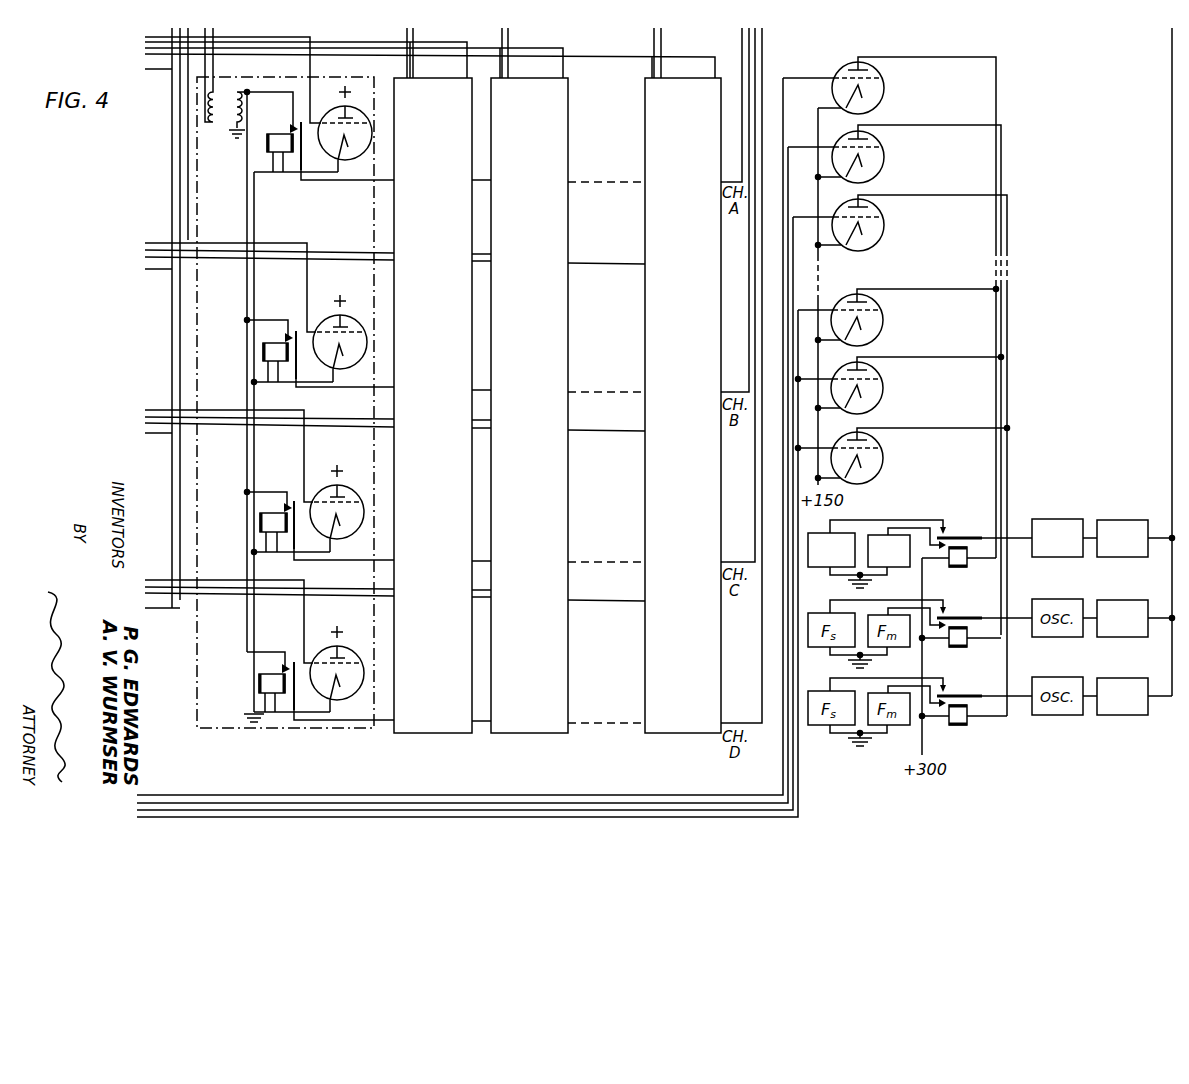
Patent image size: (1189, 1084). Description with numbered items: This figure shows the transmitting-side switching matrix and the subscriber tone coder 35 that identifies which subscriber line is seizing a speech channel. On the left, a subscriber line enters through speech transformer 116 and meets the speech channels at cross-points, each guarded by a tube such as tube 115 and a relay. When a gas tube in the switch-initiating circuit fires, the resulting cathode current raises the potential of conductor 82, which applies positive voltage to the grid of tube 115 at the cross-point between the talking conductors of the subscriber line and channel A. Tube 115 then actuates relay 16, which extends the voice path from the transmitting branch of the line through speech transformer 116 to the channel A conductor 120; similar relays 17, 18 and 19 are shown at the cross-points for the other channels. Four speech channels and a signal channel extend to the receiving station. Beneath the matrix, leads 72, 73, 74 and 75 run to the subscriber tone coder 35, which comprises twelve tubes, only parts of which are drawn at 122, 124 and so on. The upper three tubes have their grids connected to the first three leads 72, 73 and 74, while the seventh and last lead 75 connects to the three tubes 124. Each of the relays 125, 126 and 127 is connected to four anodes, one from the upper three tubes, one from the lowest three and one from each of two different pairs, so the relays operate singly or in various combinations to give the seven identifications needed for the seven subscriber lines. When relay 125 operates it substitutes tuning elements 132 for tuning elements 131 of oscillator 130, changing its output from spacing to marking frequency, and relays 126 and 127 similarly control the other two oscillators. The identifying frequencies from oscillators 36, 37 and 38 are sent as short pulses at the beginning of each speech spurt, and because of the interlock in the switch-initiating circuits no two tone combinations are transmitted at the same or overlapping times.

The relay 16 is at (290, 134).
The relay 17 is at (285, 343).
The relay 18 is at (284, 513).
The relay 19 is at (282, 674).
The subscriber tone coder 35 is at (857, 470).
The oscillator 36 is at (1117, 520).
The oscillator 37 is at (1109, 600).
The oscillator 38 is at (1109, 678).
The lead 72 is at (270, 794).
The lead 73 is at (357, 802).
The lead 74 is at (431, 809).
The lead 75 is at (504, 816).
The conductor 82 is at (312, 69).
The tube 115 is at (350, 161).
The speech transformer 116 is at (238, 92).
The channel A conductor 120 is at (316, 181).
The tube 122 is at (886, 96).
The tubes 124 is at (877, 338).
The relay 125 is at (957, 567).
The relay 126 is at (958, 647).
The relay 127 is at (958, 725).
The oscillator 130 is at (1058, 519).
The tuning elements 131 is at (820, 533).
The tuning elements 132 is at (888, 568).